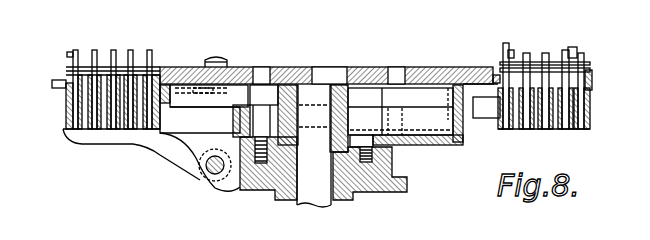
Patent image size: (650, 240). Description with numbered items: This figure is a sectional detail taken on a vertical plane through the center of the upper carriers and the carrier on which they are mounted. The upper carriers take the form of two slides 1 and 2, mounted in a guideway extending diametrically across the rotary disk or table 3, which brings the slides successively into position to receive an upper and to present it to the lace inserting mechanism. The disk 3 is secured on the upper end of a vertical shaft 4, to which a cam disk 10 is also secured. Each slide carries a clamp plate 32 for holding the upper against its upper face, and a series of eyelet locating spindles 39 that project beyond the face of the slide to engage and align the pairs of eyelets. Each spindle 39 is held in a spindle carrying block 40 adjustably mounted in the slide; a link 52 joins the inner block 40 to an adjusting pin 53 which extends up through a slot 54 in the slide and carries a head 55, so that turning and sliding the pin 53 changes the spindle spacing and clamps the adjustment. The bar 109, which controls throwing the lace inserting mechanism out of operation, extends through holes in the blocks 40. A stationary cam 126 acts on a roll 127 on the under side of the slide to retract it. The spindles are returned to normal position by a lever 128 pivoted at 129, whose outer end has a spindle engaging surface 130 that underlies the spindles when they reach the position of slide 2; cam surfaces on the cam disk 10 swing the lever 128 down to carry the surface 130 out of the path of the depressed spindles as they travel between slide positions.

The upper carrying slide 1 is at (474, 88).
The upper carrying slide 2 is at (278, 68).
The rotary disk or table 3 is at (198, 103).
The vertical shaft 4 is at (309, 192).
The cam disk 10 is at (594, 115).
The clamp plate 32 is at (550, 62).
The spindle 39 is at (70, 52).
The spindle carrying block 40 is at (64, 110).
The link 52 is at (185, 66).
The adjusting pin 53 is at (230, 73).
The slot 54 is at (201, 63).
The head 55 is at (218, 58).
The bar 109 is at (60, 85).
The stationary cam 126 is at (460, 143).
The roll 127 is at (410, 120).
The lever 128 is at (143, 138).
The pivot 129 is at (215, 175).
The spindle engaging surface 130 is at (63, 130).